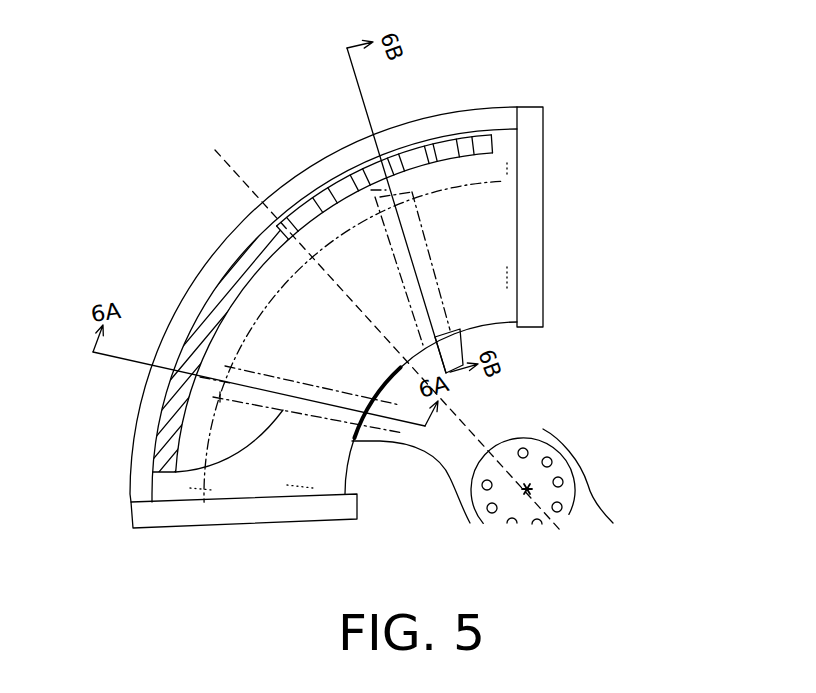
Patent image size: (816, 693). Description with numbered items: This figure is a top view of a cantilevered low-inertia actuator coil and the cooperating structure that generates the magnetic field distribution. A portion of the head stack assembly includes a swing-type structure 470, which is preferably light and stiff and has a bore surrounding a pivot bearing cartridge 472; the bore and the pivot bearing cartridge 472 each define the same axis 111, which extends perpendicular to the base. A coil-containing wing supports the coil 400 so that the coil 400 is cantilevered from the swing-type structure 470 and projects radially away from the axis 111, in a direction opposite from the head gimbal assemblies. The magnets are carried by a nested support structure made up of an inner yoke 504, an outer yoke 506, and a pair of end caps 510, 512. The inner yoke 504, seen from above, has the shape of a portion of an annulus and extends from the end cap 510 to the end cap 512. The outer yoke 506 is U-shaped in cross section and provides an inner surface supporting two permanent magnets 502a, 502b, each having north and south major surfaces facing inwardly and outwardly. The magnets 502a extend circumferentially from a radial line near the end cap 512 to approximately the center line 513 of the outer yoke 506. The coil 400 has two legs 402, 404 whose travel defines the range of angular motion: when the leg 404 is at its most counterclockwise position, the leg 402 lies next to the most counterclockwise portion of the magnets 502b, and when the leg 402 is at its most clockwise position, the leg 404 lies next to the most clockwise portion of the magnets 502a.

The outer yoke 506 is at (445, 127).
The end cap 510 is at (543, 163).
The end cap 512 is at (255, 516).
The permanent magnets 502a is at (198, 322).
The permanent magnets 502b is at (320, 187).
The center line 513 is at (238, 177).
The leg 402 is at (413, 265).
The leg 404 is at (152, 470).
The inner yoke 504 is at (493, 308).
The coil 400 is at (375, 422).
The swing-type structure 470 is at (580, 449).
The axis 111 is at (548, 455).
The pivot bearing cartridge 472 is at (533, 450).